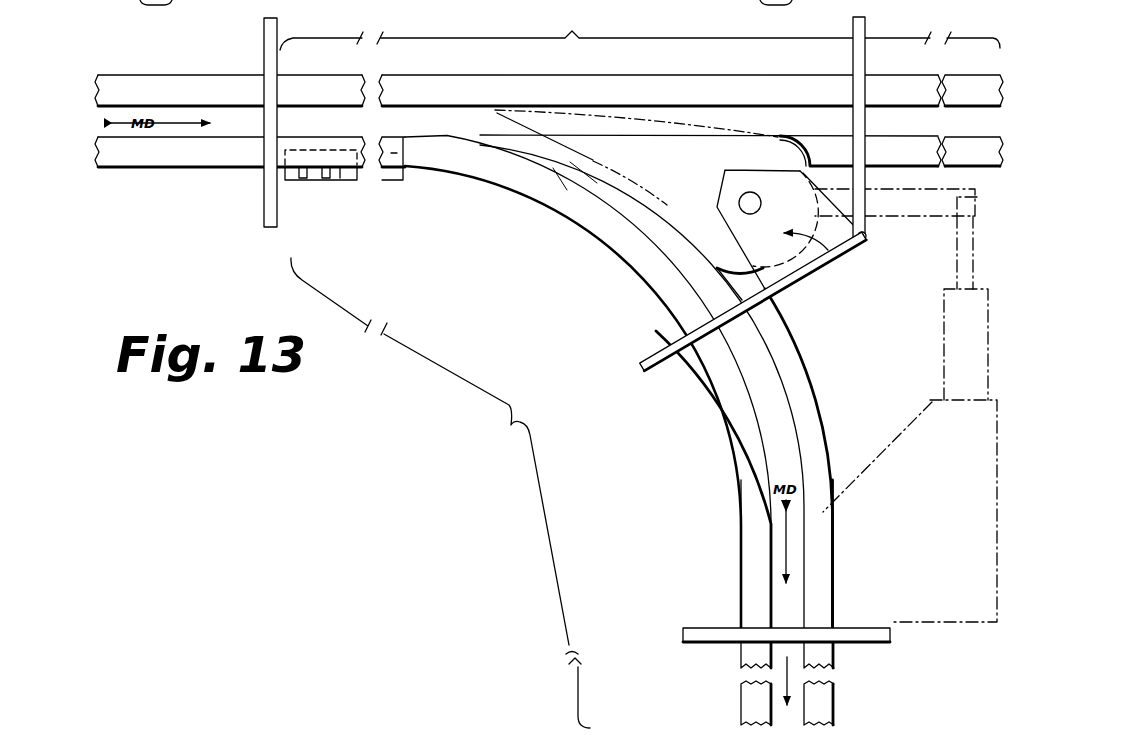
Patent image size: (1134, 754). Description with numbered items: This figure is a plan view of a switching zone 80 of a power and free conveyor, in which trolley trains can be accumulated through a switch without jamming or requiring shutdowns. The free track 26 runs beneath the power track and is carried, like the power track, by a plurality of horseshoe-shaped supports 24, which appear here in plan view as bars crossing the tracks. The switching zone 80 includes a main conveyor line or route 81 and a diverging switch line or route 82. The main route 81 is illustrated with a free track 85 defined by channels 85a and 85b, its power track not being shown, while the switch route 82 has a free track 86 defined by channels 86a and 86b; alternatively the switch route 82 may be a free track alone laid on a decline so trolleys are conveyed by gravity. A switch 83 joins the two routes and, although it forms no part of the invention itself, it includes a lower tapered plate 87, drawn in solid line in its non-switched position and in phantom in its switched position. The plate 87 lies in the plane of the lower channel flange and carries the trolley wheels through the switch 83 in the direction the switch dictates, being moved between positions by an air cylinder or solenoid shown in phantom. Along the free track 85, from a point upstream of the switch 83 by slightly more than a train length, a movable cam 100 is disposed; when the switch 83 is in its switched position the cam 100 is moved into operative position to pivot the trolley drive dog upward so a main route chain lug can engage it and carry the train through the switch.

The horseshoe-shaped supports 24 is at (268, 230).
The free track 26 is at (104, 70).
The switching zone 80 is at (596, 12).
The main conveyor line or route 81 is at (825, 122).
The switch line or route 82 is at (787, 677).
The switch 83 is at (829, 254).
The free track 85 is at (670, 86).
The channel 85a is at (994, 68).
The channel 85b is at (977, 148).
The free track 86 is at (718, 714).
The channel 86a is at (815, 476).
The channel 86b is at (738, 432).
The lower tapered plate 87 is at (590, 183).
The movable cam 100 is at (372, 170).